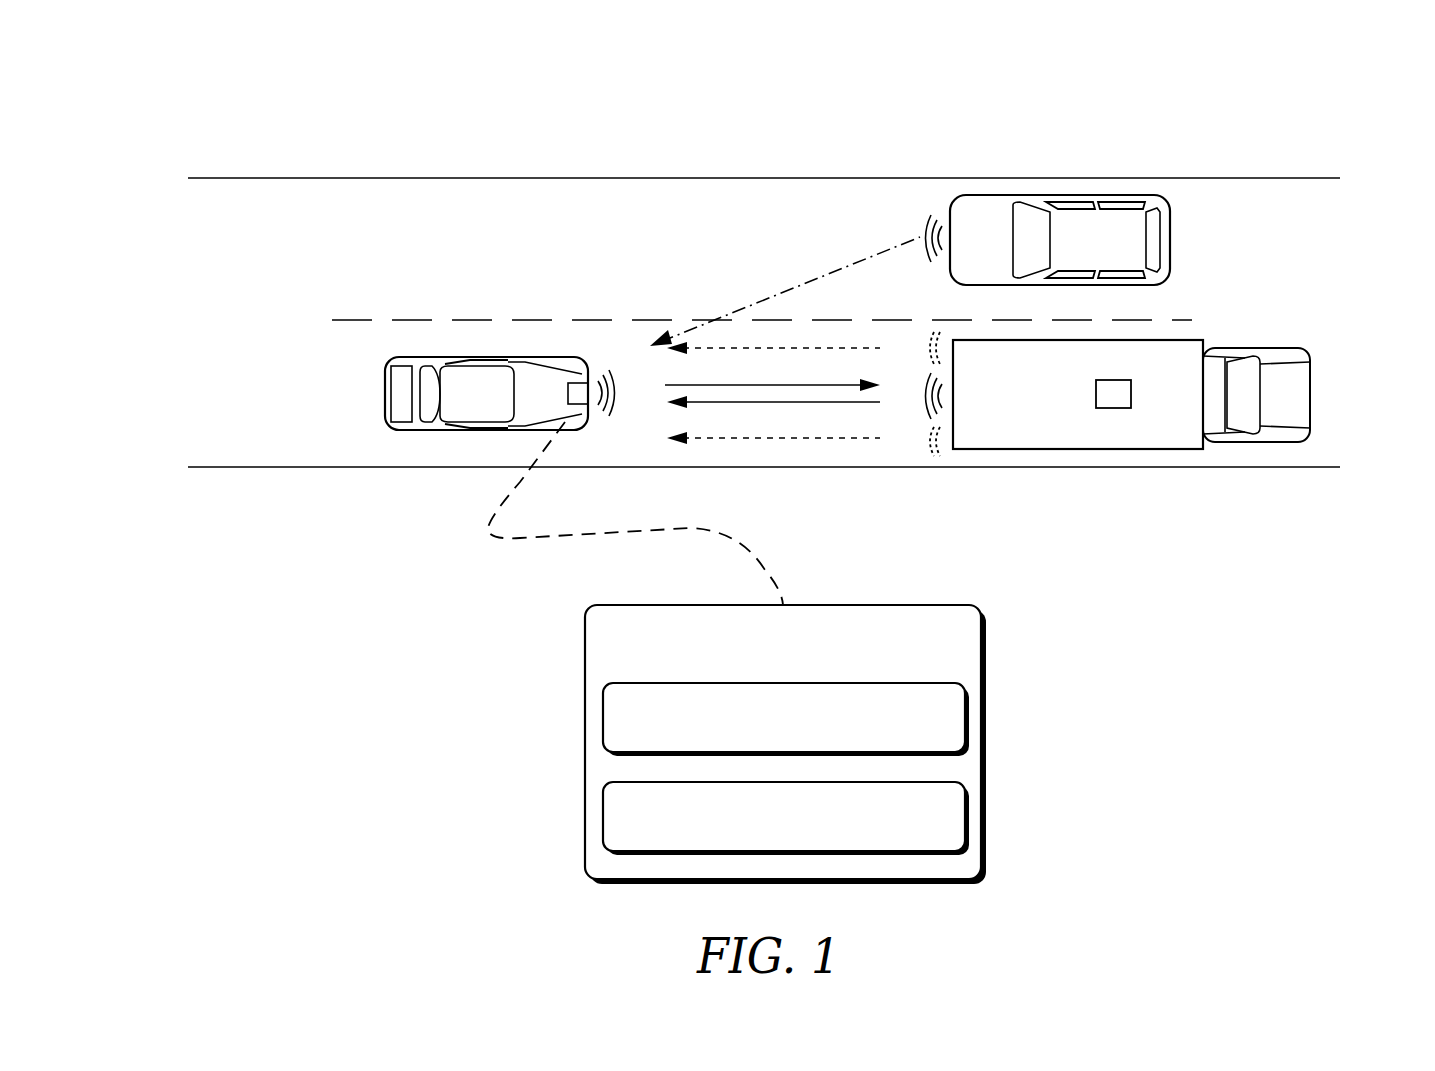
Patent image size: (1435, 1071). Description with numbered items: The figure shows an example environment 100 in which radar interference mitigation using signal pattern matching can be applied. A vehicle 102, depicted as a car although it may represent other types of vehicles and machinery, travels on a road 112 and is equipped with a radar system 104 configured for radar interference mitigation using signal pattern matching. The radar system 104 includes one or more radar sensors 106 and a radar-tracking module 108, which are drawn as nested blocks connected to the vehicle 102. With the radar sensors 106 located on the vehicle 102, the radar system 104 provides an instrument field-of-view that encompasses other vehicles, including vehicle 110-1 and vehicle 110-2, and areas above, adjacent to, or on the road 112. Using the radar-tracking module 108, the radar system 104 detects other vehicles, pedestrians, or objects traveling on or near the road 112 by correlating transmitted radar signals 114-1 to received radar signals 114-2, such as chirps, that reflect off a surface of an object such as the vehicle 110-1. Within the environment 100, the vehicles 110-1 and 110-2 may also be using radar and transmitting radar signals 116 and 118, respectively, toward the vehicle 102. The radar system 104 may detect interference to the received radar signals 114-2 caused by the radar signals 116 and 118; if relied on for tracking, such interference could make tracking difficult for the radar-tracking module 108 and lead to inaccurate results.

The environment 100 is at (203, 95).
The vehicle 102 is at (382, 402).
The radar system 104 is at (737, 653).
The radar sensors 106 is at (786, 719).
The radar-tracking module 108 is at (786, 818).
The vehicle 110-1 is at (1312, 420).
The vehicle 110-2 is at (1170, 222).
The road 112 is at (1303, 252).
The transmitted radar signals 114-1 is at (682, 385).
The received radar signals 114-2 is at (880, 402).
The radar signals 116 is at (828, 438).
The radar signals 118 is at (815, 272).